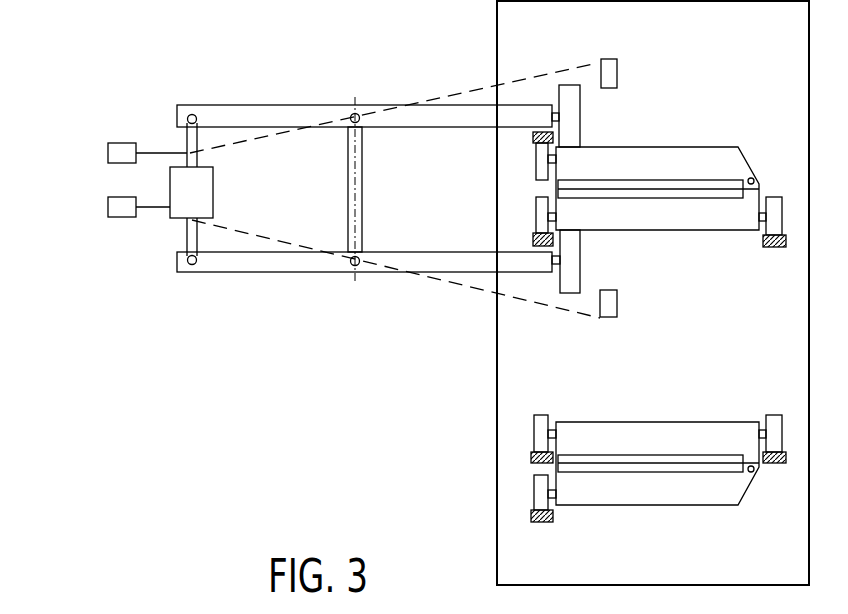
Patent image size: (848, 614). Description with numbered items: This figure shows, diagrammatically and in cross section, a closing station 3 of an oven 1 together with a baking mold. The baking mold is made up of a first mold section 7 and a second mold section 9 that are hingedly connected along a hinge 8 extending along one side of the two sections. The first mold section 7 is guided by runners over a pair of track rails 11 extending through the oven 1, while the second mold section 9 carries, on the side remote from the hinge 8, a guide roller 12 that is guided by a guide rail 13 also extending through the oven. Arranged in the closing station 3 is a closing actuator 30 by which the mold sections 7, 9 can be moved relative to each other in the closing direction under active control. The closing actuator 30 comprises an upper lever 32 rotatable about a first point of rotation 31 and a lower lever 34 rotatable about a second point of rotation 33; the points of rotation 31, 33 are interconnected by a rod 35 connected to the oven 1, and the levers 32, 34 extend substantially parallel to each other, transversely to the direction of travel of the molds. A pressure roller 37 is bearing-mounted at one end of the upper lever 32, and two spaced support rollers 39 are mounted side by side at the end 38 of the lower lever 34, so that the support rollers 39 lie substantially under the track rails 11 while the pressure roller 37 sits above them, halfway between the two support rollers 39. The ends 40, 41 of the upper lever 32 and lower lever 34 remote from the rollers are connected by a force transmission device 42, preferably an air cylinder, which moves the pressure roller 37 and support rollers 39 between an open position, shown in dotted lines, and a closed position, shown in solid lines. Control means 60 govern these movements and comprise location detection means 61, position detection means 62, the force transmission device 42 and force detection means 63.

The oven 1 is at (494, 82).
The closing station 3 is at (797, 31).
The first mold section 7 is at (703, 231).
The hinge 8 is at (754, 178).
The second mold section 9 is at (703, 146).
The track rails 11 is at (534, 240).
The guide roller 12 is at (535, 171).
The guide rail 13 is at (533, 140).
The closing actuator 30 is at (348, 102).
The first point of rotation 31 is at (359, 115).
The upper lever 32 is at (258, 104).
The second point of rotation 33 is at (358, 266).
The lower lever 34 is at (258, 274).
The rod 35 is at (363, 187).
The pressure roller 37 is at (581, 117).
The end of lower lever 38 is at (545, 285).
The support rollers 39 is at (581, 266).
The end of upper lever 40 is at (190, 102).
The end of lower lever 41 is at (190, 276).
The force transmission device 42 is at (214, 188).
The control means 60 is at (104, 180).
The location detection means 61 is at (608, 58).
The position detection means 62 is at (124, 142).
The force detection means 63 is at (124, 219).